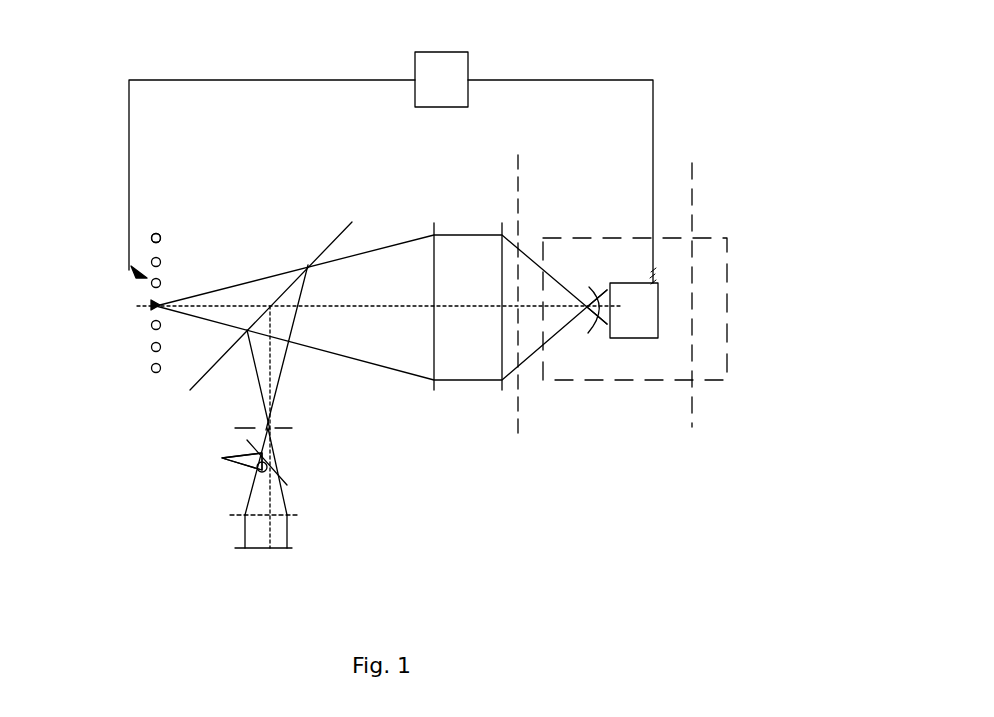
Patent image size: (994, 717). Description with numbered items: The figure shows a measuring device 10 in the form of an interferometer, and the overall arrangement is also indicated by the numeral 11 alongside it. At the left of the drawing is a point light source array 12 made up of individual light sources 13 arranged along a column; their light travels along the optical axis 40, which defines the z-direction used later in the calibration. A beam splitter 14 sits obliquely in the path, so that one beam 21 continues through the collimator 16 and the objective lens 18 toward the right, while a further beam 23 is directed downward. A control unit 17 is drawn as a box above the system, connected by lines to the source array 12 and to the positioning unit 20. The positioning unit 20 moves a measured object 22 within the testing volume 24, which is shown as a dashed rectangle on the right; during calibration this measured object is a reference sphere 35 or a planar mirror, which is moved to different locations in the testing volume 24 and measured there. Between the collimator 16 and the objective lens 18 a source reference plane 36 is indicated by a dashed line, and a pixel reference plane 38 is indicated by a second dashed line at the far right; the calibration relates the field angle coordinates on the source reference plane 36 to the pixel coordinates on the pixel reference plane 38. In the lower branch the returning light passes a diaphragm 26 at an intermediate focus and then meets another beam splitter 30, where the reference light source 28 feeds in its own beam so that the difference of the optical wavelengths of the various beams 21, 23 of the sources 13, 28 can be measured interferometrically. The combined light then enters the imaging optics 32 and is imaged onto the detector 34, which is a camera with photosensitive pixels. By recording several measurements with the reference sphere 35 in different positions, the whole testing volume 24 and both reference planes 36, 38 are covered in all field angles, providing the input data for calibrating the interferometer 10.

The measuring device 10 is at (577, 537).
The measuring system 11 is at (680, 612).
The point light source array 12 is at (120, 338).
The light source 13 is at (159, 232).
The beam splitter 14 is at (340, 232).
The collimator 16 is at (440, 364).
The control unit 17 is at (447, 52).
The objective lens 18 is at (500, 364).
The positioning unit 20 is at (637, 283).
The beam 21 is at (240, 284).
The measured object 22 is at (596, 344).
The beam 23 is at (244, 458).
The testing volume 24 is at (727, 333).
The diaphragm 26 is at (290, 418).
The reference light source 28 is at (225, 460).
The beam splitter 30 is at (281, 482).
The imaging optics 32 is at (293, 508).
The detector 34 is at (312, 547).
The reference sphere 35 is at (600, 283).
The source reference plane 36 is at (515, 430).
The pixel reference plane 38 is at (687, 443).
The optical axis 40 is at (381, 300).